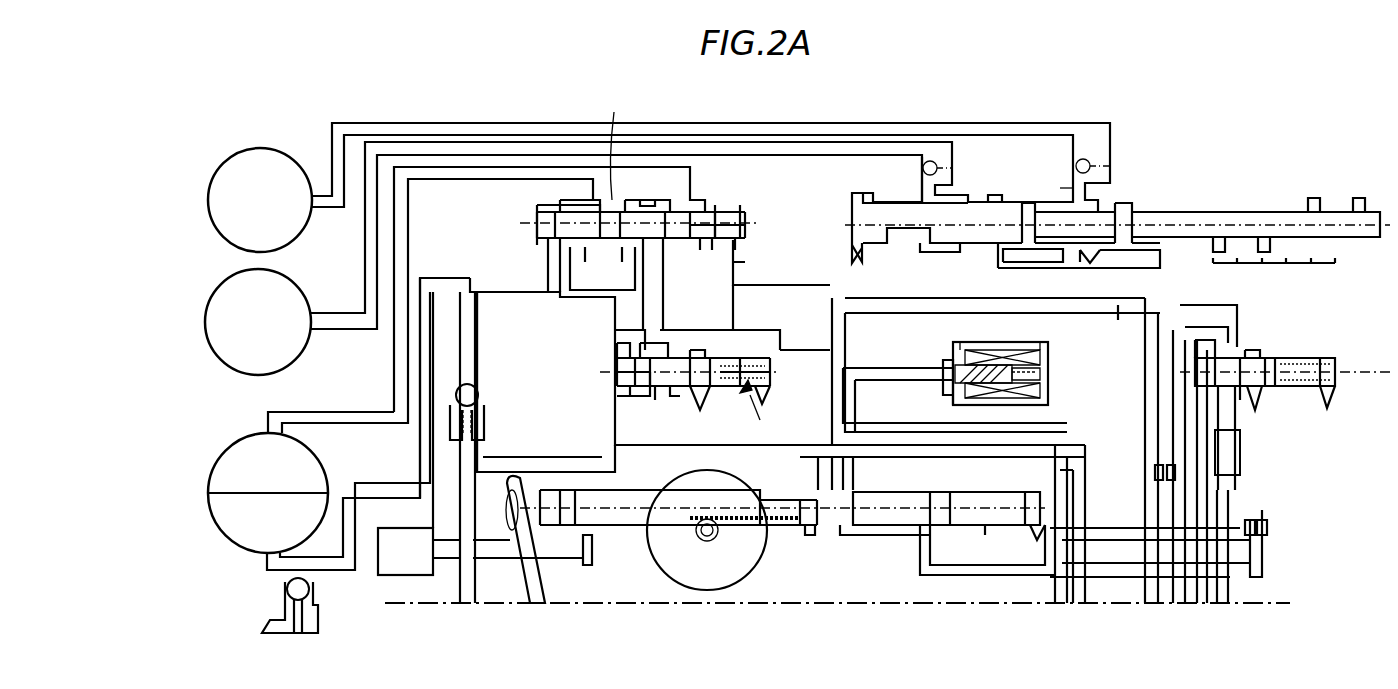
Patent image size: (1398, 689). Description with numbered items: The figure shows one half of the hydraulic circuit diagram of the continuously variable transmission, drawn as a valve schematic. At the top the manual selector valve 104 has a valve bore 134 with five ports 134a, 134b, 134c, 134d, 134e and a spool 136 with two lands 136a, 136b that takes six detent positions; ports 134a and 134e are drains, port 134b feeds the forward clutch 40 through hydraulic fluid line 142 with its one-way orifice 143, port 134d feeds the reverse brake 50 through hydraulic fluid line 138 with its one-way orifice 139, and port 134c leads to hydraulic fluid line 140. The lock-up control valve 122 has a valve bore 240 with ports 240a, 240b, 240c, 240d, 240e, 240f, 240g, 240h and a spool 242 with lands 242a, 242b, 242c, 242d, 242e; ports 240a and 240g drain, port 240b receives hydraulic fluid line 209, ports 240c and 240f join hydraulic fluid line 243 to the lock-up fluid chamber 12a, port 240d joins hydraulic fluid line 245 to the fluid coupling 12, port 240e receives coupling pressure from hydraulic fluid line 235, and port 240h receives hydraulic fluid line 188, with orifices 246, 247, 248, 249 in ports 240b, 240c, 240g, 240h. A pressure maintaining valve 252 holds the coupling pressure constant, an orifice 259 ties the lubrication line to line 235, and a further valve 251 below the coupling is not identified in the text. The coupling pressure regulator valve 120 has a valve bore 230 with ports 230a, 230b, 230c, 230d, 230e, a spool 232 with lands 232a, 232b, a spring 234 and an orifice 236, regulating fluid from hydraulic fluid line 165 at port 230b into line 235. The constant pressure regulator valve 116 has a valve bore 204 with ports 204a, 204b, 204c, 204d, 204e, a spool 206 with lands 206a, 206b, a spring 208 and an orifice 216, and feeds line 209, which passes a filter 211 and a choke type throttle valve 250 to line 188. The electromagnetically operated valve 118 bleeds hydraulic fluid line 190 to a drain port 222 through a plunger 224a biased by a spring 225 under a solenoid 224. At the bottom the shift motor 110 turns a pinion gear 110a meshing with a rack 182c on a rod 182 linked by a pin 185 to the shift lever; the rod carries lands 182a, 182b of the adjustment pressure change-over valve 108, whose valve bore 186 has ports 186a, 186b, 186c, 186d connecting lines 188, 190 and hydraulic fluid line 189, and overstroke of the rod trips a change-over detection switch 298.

The reverse brake 50 is at (308, 178).
The forward clutch 40 is at (306, 300).
The fluid coupling 12 is at (243, 540).
The lock-up fluid chamber 12a is at (318, 460).
The check valve 251 is at (312, 585).
The change-over detection switch 298 is at (406, 528).
The hydraulic fluid line 243 is at (408, 212).
The lock-up control valve 122 is at (500, 228).
The spool 242 is at (537, 228).
The land 242a is at (552, 208).
The land 242b is at (600, 210).
The land 242c is at (645, 193).
The land 242d is at (705, 198).
The land 242e is at (748, 218).
The valve bore 240 is at (740, 195).
The port 240a is at (545, 247).
The port 240b is at (555, 258).
The port 240c is at (602, 268).
The port 240d is at (580, 290).
The port 240e is at (690, 262).
The port 240f is at (748, 230).
The port 240g is at (735, 268).
The port 240h is at (748, 252).
The orifice 247 is at (614, 143).
The orifice 249 is at (750, 270).
The hydraulic fluid line 235 is at (665, 270).
The orifice 246 is at (570, 292).
The orifice 248 is at (720, 275).
The hydraulic fluid line 245 is at (460, 346).
The pressure maintaining valve 252 is at (478, 395).
The orifice 259 is at (570, 470).
The valve bore 230 is at (765, 360).
The port 230a is at (628, 398).
The port 230b is at (652, 402).
The port 230c is at (670, 400).
The port 230d is at (705, 395).
The port 230e is at (768, 395).
The spool 232 is at (640, 380).
The land 232a is at (648, 360).
The land 232b is at (720, 355).
The spring 234 is at (770, 375).
The orifice 236 is at (618, 352).
The coupling pressure regulator valve 120 is at (761, 410).
The hydraulic fluid line 142 is at (820, 150).
The one-way orifice 143 is at (940, 168).
The hydraulic fluid line 138 is at (1040, 140).
The one-way orifice 139 is at (1090, 160).
The manual selector valve 104 is at (1128, 168).
The valve bore 134 is at (1165, 168).
The port 134a is at (870, 265).
The port 134b is at (935, 257).
The port 134c is at (950, 300).
The port 134d is at (1064, 255).
The port 134e is at (1120, 258).
The spool 136 is at (1260, 212).
The land 136a is at (1027, 210).
The land 136b is at (1122, 210).
The hydraulic fluid line 188 is at (832, 345).
The electromagnetically operated valve 118 is at (918, 347).
The solenoid 224 is at (1035, 350).
The plunger 224a is at (978, 350).
The spring 225 is at (1040, 372).
The drain port 222 is at (950, 398).
The hydraulic fluid line 190 is at (868, 382).
The hydraulic fluid line 209 is at (1118, 322).
The orifice 216 is at (1165, 360).
The valve bore 204 is at (1312, 355).
The port 204a is at (1190, 385).
The port 204b is at (1200, 440).
The port 204c is at (1236, 440).
The port 204d is at (1262, 410).
The port 204e is at (1330, 398).
The spool 206 is at (1320, 364).
The land 206a is at (1225, 345).
The land 206b is at (1255, 352).
The spring 208 is at (1320, 378).
The constant pressure regulator valve 116 is at (1272, 398).
The hydraulic fluid line 140 is at (1150, 430).
The filter 211 is at (1240, 460).
The choke type throttle valve 250 is at (1150, 472).
The hydraulic fluid line 165 is at (937, 455).
The valve bore 186 is at (985, 496).
The port 186a is at (845, 540).
The port 186b is at (860, 538).
The port 186c is at (987, 545).
The port 186d is at (1028, 543).
The rod 182 is at (620, 518).
The land 182a is at (820, 540).
The land 182b is at (985, 526).
The rack 182c is at (795, 525).
The pin 185 is at (515, 512).
The shift motor 110 is at (625, 580).
The pinion gear 110a is at (718, 545).
The adjustment pressure change-over valve 108 is at (918, 560).
The hydraulic fluid line 189 is at (952, 576).